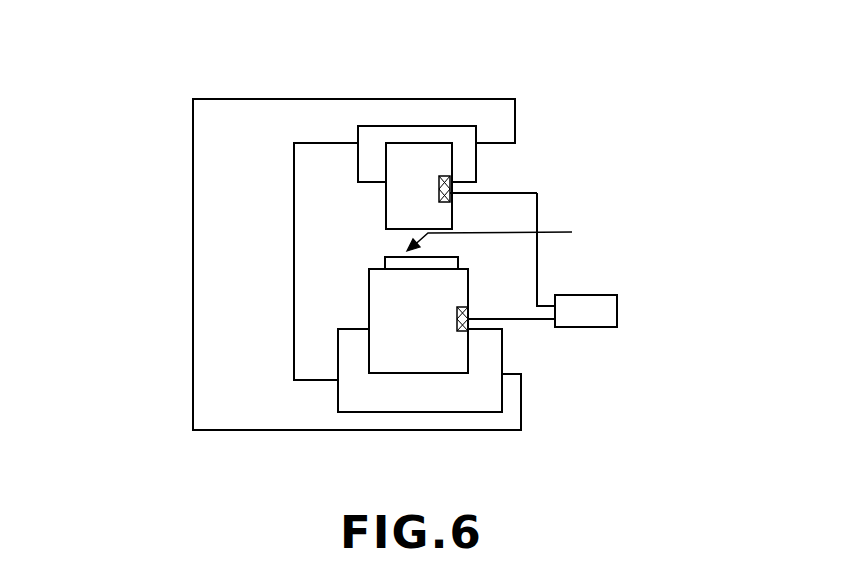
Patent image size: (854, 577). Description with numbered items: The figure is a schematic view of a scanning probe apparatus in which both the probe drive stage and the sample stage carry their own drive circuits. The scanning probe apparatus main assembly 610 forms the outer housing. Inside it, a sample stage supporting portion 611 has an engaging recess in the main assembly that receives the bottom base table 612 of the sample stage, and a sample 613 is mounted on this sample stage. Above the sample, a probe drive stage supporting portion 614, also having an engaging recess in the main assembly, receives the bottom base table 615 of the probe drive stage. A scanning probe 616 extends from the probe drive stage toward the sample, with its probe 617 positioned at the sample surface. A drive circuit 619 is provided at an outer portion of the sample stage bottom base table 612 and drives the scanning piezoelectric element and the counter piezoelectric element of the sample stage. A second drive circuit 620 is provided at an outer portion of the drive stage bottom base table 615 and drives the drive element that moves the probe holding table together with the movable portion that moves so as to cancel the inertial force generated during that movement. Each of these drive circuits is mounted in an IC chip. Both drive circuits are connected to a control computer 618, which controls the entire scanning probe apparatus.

The scanning probe apparatus main assembly 610 is at (203, 415).
The sample stage supporting portion 611 is at (347, 343).
The bottom base table of sample stage 612 is at (383, 309).
The sample 613 is at (383, 258).
The probe drive stage supporting portion 614 is at (473, 138).
The bottom base table of probe drive stage 615 is at (443, 160).
The scanning probe 616 is at (515, 233).
The probe 617 is at (412, 253).
The control computer 618 is at (612, 312).
The drive circuit 619 is at (457, 322).
The drive circuit 620 is at (440, 184).